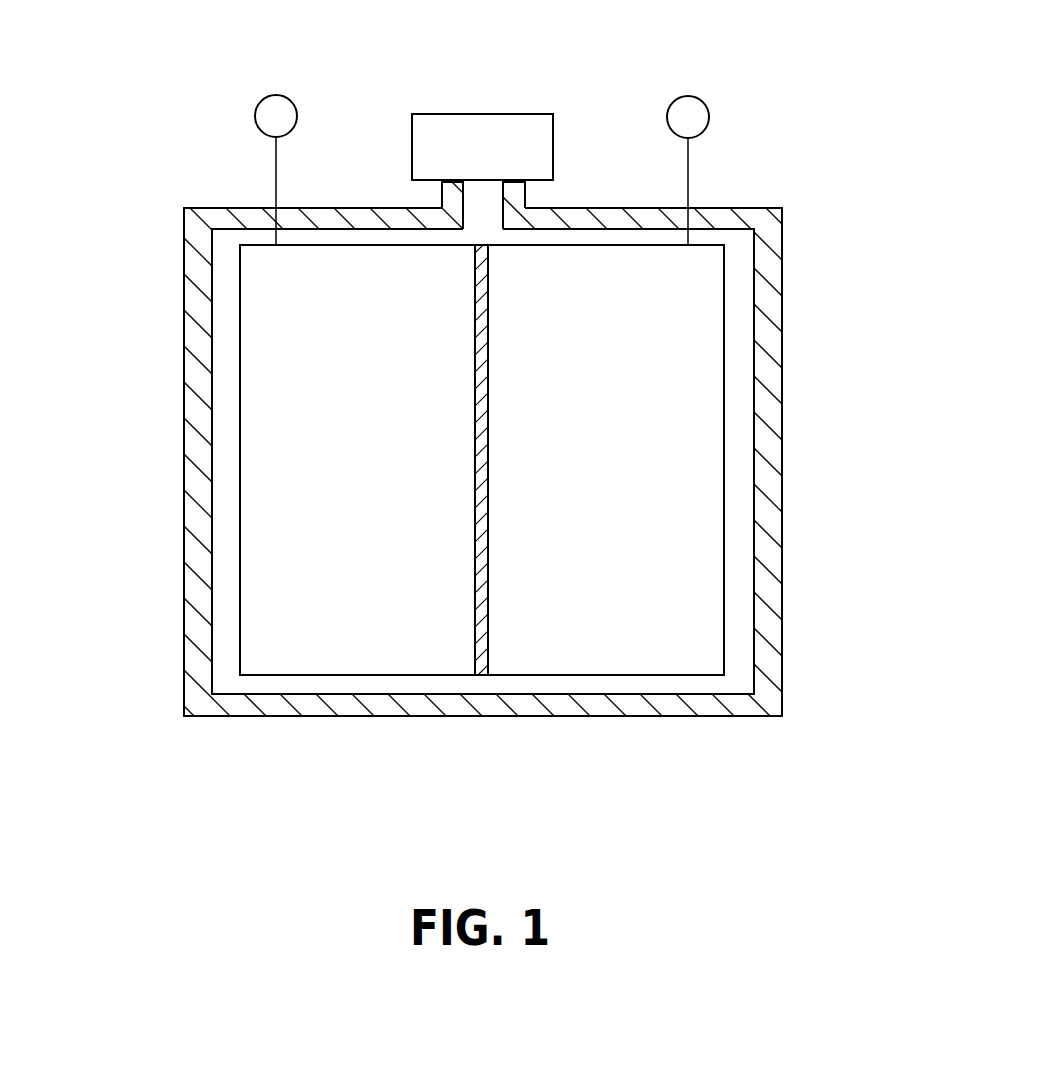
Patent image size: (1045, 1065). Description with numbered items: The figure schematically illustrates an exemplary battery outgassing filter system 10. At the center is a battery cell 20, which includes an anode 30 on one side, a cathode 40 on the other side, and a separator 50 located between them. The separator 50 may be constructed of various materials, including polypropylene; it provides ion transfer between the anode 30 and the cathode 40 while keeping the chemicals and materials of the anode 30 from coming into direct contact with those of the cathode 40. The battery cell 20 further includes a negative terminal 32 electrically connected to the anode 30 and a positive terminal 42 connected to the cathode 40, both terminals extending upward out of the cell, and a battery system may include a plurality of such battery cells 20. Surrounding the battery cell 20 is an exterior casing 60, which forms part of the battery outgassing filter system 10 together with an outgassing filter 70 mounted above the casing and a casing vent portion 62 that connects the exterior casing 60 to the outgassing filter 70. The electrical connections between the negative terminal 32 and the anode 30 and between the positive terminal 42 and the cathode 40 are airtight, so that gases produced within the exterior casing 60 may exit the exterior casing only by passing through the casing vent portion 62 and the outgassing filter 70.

The battery outgassing filter system 10 is at (152, 165).
The battery cell 20 is at (239, 367).
The anode 30 is at (283, 467).
The negative terminal 32 is at (292, 100).
The cathode 40 is at (685, 468).
The positive terminal 42 is at (702, 98).
The separator 50 is at (488, 627).
The exterior casing 60 is at (767, 307).
The casing vent portion 62 is at (443, 195).
The outgassing filter 70 is at (498, 138).